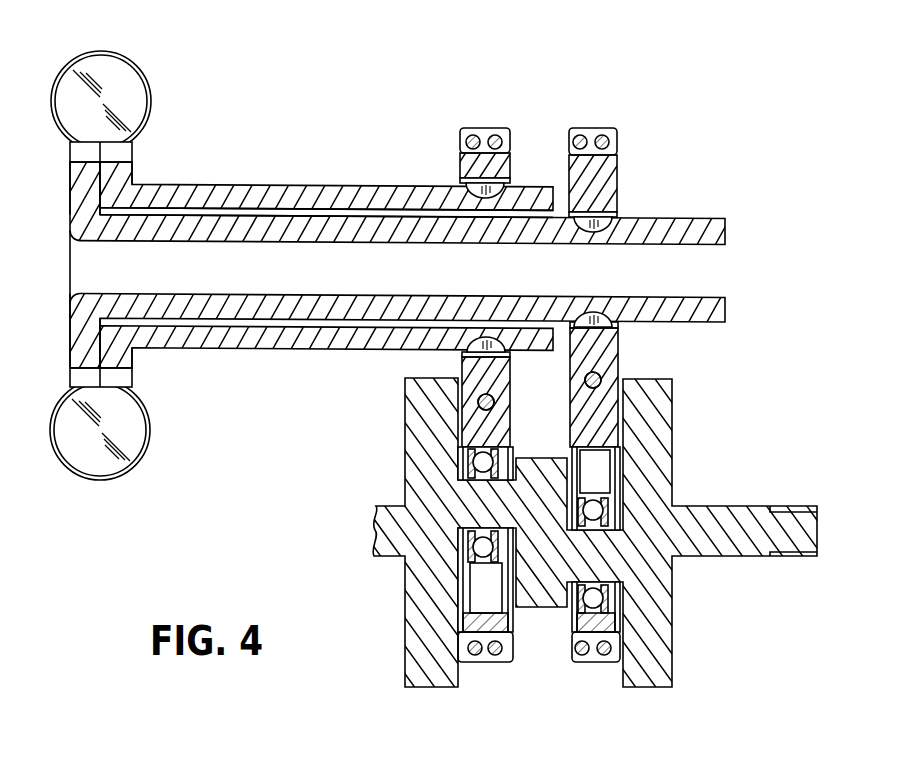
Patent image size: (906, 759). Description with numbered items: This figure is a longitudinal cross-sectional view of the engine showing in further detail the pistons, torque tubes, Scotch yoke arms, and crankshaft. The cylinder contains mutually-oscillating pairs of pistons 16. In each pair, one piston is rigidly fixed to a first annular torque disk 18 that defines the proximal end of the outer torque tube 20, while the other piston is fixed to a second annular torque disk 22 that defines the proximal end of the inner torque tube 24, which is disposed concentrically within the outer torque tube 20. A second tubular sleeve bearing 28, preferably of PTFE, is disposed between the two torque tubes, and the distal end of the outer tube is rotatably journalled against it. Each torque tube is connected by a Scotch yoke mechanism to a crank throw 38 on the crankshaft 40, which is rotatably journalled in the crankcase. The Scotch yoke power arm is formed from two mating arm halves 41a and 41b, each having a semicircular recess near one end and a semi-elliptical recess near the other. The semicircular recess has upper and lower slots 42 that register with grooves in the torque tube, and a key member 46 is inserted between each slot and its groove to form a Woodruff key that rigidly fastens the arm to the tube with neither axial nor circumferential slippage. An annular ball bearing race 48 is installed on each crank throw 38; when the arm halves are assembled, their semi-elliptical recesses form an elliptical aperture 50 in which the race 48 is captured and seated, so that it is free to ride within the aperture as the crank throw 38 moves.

The pistons 16 is at (127, 85).
The first annular torque disk 18 is at (122, 163).
The outer torque tube 20 is at (293, 186).
The second annular torque disk 22 is at (80, 193).
The inner torque tube 24 is at (285, 308).
The second tubular sleeve bearing 28 is at (227, 212).
The crank throw 38 is at (498, 490).
The crankshaft 40 is at (382, 503).
The arm half 41a is at (460, 155).
The arm half 41b is at (618, 168).
The slots 42 is at (513, 183).
The key member 46 is at (462, 183).
The ball bearing race 48 is at (510, 422).
The elliptical aperture 50 is at (608, 452).